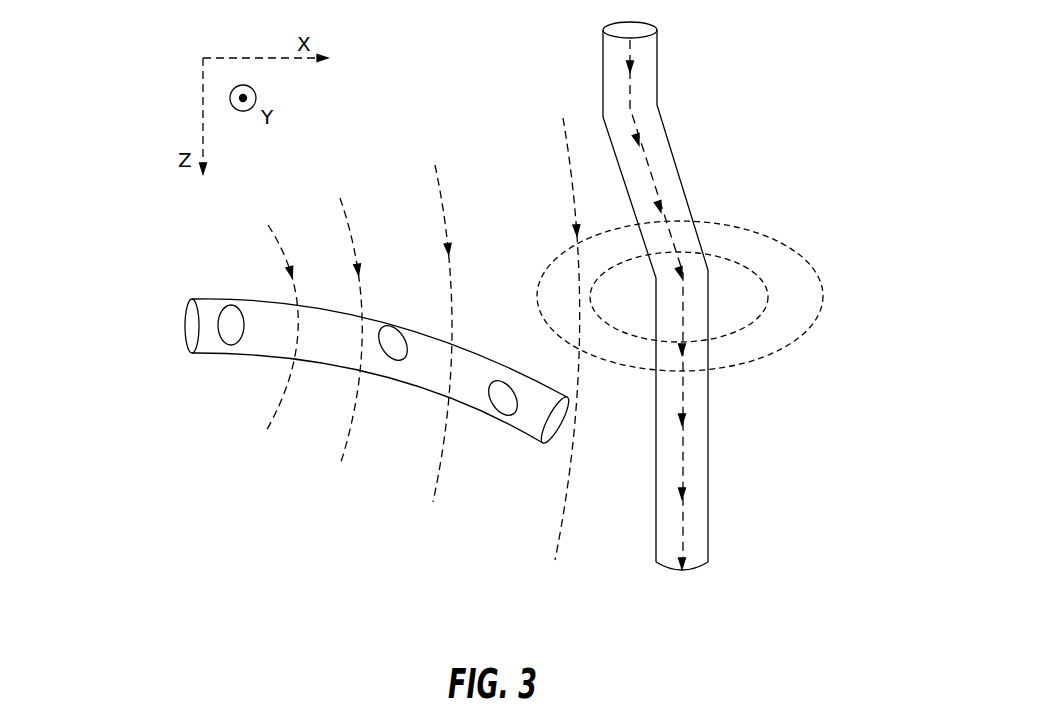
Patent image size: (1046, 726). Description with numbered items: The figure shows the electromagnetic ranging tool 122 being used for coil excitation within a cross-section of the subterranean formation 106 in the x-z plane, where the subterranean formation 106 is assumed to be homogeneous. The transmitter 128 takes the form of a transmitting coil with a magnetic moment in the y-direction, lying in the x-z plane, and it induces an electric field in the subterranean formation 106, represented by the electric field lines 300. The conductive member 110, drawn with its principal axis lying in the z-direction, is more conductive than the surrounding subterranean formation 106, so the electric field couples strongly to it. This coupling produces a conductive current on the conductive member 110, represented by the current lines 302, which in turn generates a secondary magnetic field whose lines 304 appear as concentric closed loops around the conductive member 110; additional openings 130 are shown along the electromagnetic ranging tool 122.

The subterranean formation 106 is at (305, 532).
The conductive member 110 is at (697, 232).
The electromagnetic ranging tool 122 is at (204, 298).
The transmitter 128 is at (226, 338).
The side openings 130 is at (389, 337).
The electric field lines 300 is at (343, 212).
The current lines 302 is at (633, 127).
The spray pattern 304 is at (802, 333).